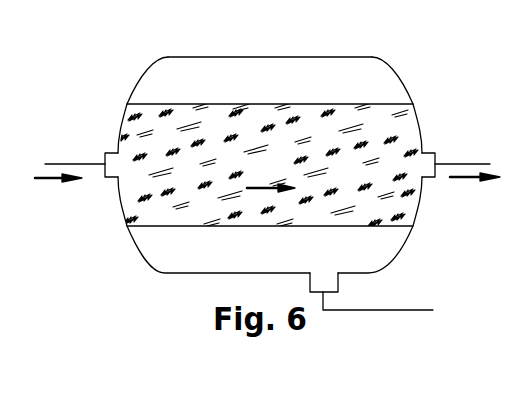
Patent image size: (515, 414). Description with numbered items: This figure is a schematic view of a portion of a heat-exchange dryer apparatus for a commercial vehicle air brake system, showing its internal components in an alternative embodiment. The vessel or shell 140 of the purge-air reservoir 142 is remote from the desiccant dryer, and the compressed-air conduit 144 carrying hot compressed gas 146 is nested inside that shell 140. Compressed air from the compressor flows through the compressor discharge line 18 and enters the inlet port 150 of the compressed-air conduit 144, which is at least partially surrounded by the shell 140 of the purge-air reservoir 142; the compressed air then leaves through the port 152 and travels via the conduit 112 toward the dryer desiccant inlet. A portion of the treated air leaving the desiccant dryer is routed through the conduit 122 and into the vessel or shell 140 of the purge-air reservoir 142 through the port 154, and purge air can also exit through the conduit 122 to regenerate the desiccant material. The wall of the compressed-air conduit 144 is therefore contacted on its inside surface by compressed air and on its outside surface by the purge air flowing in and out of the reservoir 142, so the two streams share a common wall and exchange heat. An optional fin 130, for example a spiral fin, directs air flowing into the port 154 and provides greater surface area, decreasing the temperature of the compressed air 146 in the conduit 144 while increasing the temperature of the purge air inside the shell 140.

The fin 130 is at (420, 81).
The vessel or shell 140 is at (158, 60).
The purge-air reservoir 142 is at (198, 84).
The compressed-air conduit 144 is at (163, 226).
The hot compressed gas 146 is at (138, 212).
The inlet port 150 is at (104, 152).
The port 152 is at (436, 179).
The port 154 is at (314, 293).
The compressor discharge line 18 is at (72, 164).
The conduit 112 is at (463, 164).
The conduit 122 is at (377, 310).